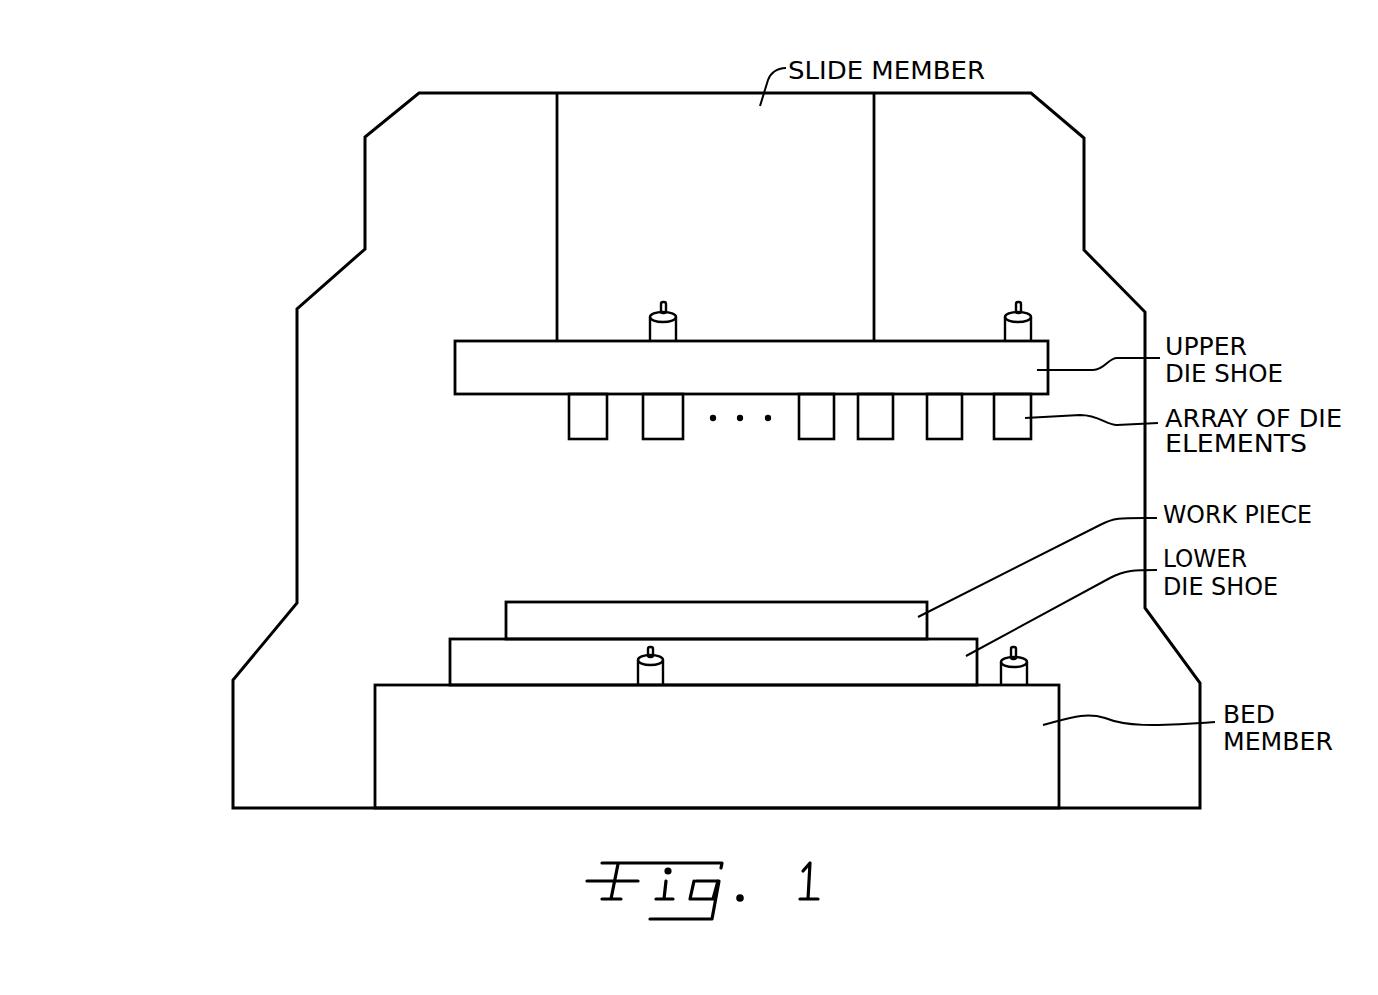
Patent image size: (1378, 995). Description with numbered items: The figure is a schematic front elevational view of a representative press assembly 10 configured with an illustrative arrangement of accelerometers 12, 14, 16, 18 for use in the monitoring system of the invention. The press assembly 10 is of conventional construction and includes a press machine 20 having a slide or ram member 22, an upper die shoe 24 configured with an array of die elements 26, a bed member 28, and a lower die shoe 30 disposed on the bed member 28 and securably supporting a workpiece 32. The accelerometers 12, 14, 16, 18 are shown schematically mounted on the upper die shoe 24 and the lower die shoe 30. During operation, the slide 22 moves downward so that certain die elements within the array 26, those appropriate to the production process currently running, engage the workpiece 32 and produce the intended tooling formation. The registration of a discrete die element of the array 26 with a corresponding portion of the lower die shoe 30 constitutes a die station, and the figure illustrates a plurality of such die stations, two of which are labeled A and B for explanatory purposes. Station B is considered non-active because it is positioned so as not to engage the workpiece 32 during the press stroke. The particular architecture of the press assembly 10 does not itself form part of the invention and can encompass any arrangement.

The press assembly 10 is at (1207, 165).
The accelerometer 12 is at (674, 330).
The accelerometer 14 is at (663, 669).
The accelerometer 16 is at (1031, 328).
The accelerometer 18 is at (1027, 671).
The press machine 20 is at (985, 206).
The slide or ram member 22 is at (731, 209).
The upper die shoe 24 is at (770, 379).
The array of die elements 26 is at (545, 465).
The bed member 28 is at (729, 763).
The lower die shoe 30 is at (812, 677).
The workpiece 32 is at (888, 633).